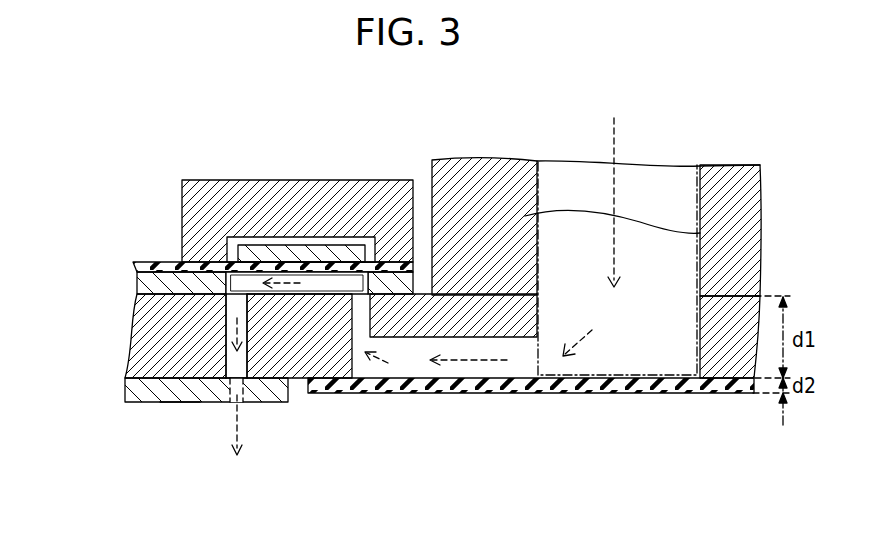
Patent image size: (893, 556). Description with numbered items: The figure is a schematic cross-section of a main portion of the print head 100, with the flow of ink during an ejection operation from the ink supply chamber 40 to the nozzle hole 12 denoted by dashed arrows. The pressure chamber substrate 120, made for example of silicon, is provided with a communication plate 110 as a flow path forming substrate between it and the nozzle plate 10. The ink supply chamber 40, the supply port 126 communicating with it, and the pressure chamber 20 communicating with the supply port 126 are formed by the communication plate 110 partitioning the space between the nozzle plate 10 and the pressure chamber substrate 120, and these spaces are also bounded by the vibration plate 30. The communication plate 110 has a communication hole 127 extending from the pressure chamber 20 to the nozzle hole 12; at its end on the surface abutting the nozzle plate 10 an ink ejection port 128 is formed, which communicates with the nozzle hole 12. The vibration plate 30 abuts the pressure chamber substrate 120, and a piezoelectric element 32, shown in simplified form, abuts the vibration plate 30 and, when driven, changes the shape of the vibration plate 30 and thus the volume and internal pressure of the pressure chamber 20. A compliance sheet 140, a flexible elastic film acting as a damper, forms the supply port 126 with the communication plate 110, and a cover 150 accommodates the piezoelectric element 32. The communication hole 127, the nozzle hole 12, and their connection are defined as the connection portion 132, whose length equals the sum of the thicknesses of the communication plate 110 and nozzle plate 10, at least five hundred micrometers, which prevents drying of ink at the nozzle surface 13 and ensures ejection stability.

The print head 100 is at (706, 99).
The nozzle plate 10 is at (152, 390).
The nozzle hole 12 is at (238, 383).
The nozzle surface 13 is at (178, 403).
The pressure chamber 20 is at (222, 298).
The vibration plate 30 is at (157, 266).
The piezoelectric element 32 is at (256, 250).
The ink supply chamber 40 is at (575, 158).
The communication plate 110 is at (137, 347).
The pressure chamber substrate 120 is at (133, 283).
The supply port 126 is at (480, 372).
The communication hole 127 is at (233, 380).
The ink ejection port 128 is at (242, 385).
The connection portion 132 is at (180, 502).
The compliance sheet 140 is at (608, 393).
The cover 150 is at (332, 180).